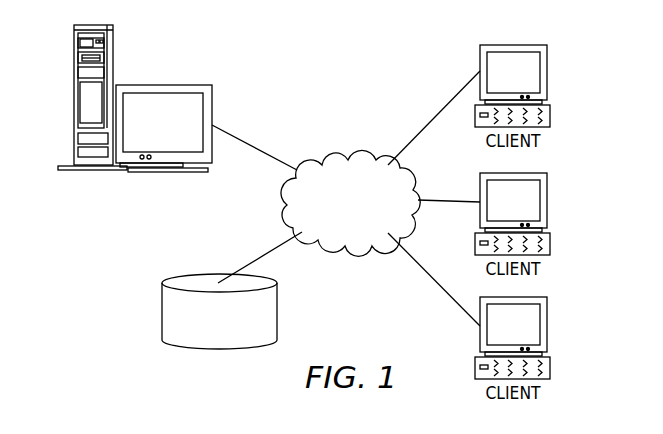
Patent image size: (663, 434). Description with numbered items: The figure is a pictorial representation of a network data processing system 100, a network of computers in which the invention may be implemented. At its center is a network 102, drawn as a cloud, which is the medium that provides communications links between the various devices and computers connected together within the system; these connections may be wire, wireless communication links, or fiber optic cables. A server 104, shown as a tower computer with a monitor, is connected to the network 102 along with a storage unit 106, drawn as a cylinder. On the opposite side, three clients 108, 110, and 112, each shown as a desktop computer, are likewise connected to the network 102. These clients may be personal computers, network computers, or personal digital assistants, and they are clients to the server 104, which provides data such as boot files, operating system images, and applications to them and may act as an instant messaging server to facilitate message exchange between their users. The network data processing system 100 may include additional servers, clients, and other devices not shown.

The network data processing system 100 is at (399, 54).
The network 102 is at (327, 157).
The server 104 is at (75, 100).
The storage unit 106 is at (162, 312).
The client 108 is at (547, 73).
The client 110 is at (547, 200).
The client 112 is at (545, 325).